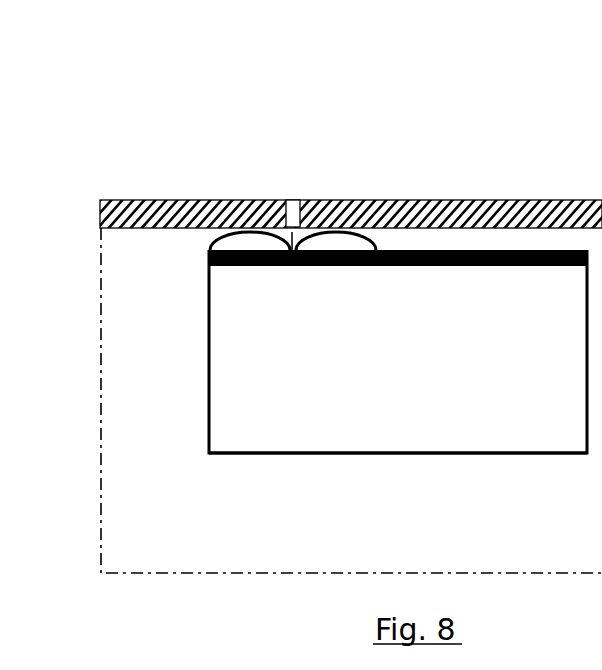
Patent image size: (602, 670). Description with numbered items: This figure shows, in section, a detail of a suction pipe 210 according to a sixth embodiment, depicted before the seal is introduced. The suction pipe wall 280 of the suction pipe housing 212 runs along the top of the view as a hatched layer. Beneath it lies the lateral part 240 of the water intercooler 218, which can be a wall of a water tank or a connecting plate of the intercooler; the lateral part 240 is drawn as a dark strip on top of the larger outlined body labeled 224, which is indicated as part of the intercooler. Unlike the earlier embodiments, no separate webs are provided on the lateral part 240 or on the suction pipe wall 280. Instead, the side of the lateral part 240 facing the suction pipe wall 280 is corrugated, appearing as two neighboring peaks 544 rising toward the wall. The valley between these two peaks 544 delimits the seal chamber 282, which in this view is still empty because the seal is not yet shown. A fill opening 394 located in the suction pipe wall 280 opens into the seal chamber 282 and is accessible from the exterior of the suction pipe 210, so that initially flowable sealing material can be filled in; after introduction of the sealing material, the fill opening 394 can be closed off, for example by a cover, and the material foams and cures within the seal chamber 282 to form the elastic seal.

The suction pipe 210 is at (215, 90).
The suction pipe housing 212 is at (338, 169).
The water intercooler 218 is at (525, 465).
The housing 224 is at (533, 424).
The lateral part 240 is at (563, 267).
The suction pipe wall 280 is at (490, 200).
The seal chamber 282 is at (295, 263).
The fill opening 394 is at (293, 212).
The peaks 544 is at (217, 243).